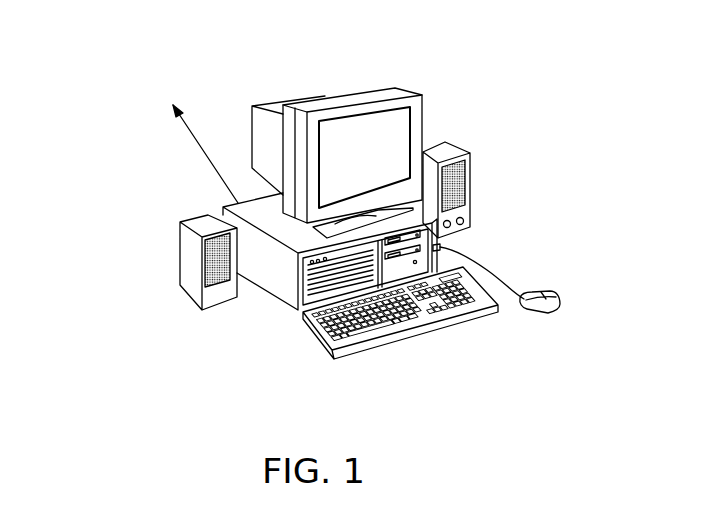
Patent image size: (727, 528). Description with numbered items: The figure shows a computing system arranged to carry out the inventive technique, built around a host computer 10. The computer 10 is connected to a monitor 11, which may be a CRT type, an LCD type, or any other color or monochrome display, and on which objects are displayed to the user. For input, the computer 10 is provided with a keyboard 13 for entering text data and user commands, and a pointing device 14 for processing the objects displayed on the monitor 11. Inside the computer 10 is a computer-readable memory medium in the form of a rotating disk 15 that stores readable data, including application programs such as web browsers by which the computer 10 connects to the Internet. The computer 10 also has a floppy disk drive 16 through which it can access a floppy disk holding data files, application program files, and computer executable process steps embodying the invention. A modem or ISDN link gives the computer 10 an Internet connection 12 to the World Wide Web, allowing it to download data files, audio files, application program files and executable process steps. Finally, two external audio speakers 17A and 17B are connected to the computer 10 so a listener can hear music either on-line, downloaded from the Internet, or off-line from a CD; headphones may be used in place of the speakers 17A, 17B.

The host computer 10 is at (455, 73).
The monitor 11 is at (398, 127).
The Internet connection 12 is at (200, 145).
The keyboard 13 is at (357, 345).
The pointing device 14 is at (547, 313).
The rotating disk 15 is at (440, 248).
The floppy disk drive 16 is at (440, 238).
The external audio speaker 17A is at (458, 154).
The external audio speaker 17B is at (180, 234).